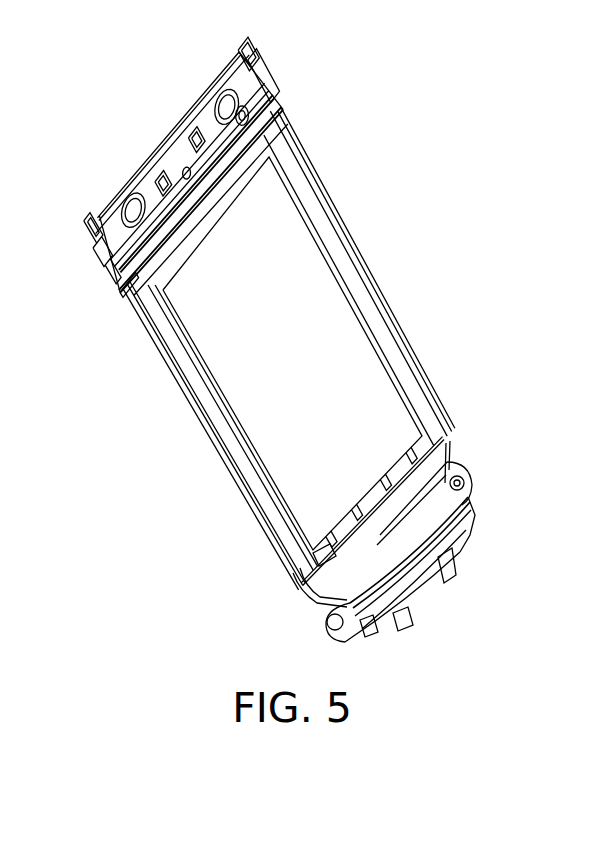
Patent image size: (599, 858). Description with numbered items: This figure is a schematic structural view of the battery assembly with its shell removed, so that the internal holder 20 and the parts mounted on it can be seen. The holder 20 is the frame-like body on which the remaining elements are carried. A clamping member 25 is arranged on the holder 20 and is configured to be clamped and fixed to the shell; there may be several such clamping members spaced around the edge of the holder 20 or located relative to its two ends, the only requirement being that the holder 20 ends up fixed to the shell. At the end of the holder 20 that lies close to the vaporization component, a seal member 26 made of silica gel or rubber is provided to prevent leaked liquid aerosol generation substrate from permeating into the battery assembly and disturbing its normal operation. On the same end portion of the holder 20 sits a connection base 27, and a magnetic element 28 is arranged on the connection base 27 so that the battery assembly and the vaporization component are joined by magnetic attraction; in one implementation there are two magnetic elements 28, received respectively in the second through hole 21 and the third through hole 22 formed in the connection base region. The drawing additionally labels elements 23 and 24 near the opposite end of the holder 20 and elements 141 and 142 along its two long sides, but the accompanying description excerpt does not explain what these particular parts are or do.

The holder 20 is at (153, 337).
The second through hole 21 is at (140, 207).
The third through hole 22 is at (233, 87).
The clip 23 is at (300, 570).
The bottom housing 24 is at (443, 400).
The clamping member 25 is at (92, 257).
The seal member 26 is at (130, 287).
The connection base 27 is at (180, 160).
The magnetic element 28 is at (123, 195).
The left side wall 141 is at (207, 387).
The right side wall 142 is at (352, 287).